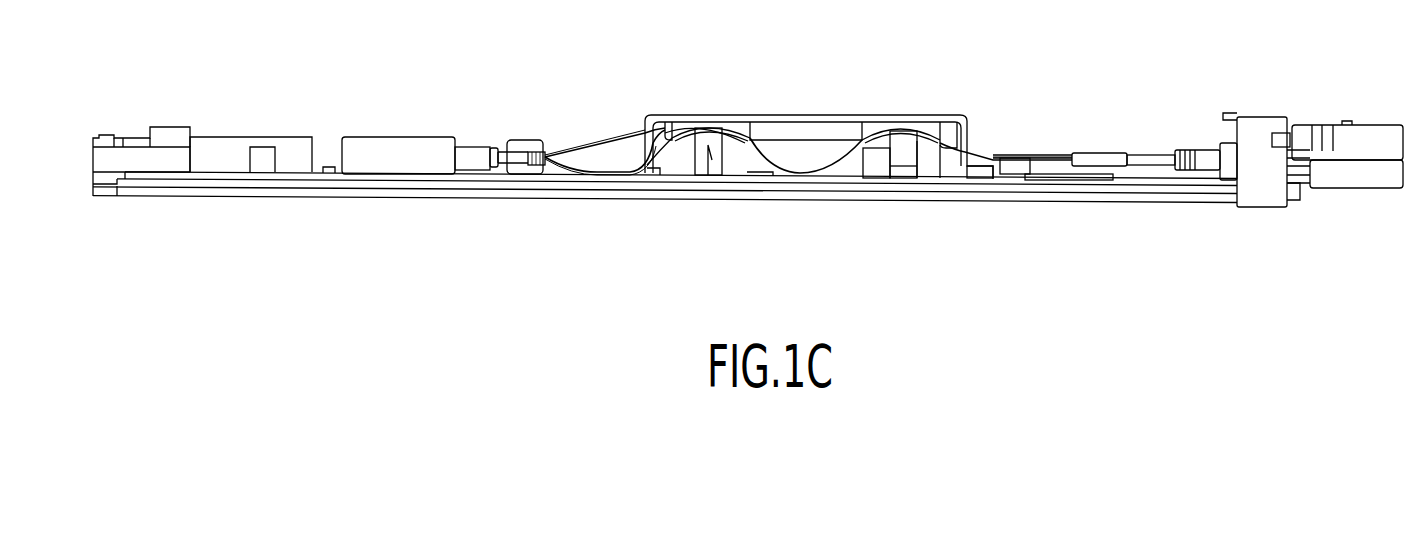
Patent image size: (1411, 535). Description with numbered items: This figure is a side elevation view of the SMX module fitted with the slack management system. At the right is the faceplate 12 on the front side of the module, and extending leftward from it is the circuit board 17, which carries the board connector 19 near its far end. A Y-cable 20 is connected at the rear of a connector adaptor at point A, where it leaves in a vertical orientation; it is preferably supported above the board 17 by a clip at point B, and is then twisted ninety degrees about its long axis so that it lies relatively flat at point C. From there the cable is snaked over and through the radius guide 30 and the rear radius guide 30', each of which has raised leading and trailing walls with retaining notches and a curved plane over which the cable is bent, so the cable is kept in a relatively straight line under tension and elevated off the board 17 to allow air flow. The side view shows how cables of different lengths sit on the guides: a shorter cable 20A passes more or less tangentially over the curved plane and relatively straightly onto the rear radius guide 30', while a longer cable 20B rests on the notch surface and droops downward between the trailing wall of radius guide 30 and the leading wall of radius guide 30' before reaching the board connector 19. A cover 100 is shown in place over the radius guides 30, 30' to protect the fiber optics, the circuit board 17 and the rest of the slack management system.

The circuit board 17 is at (256, 57).
The board connector 19 is at (402, 142).
The shorter cable 20A is at (598, 150).
The longer cable 20B is at (613, 163).
The cover 100 is at (797, 117).
The radius guide 30 is at (928, 119).
The rear radius guide 30' is at (706, 193).
The Y-cable 20 is at (980, 151).
The point C is at (1072, 155).
The point B is at (1127, 155).
The point A is at (1213, 150).
The faceplate 12 is at (1262, 188).